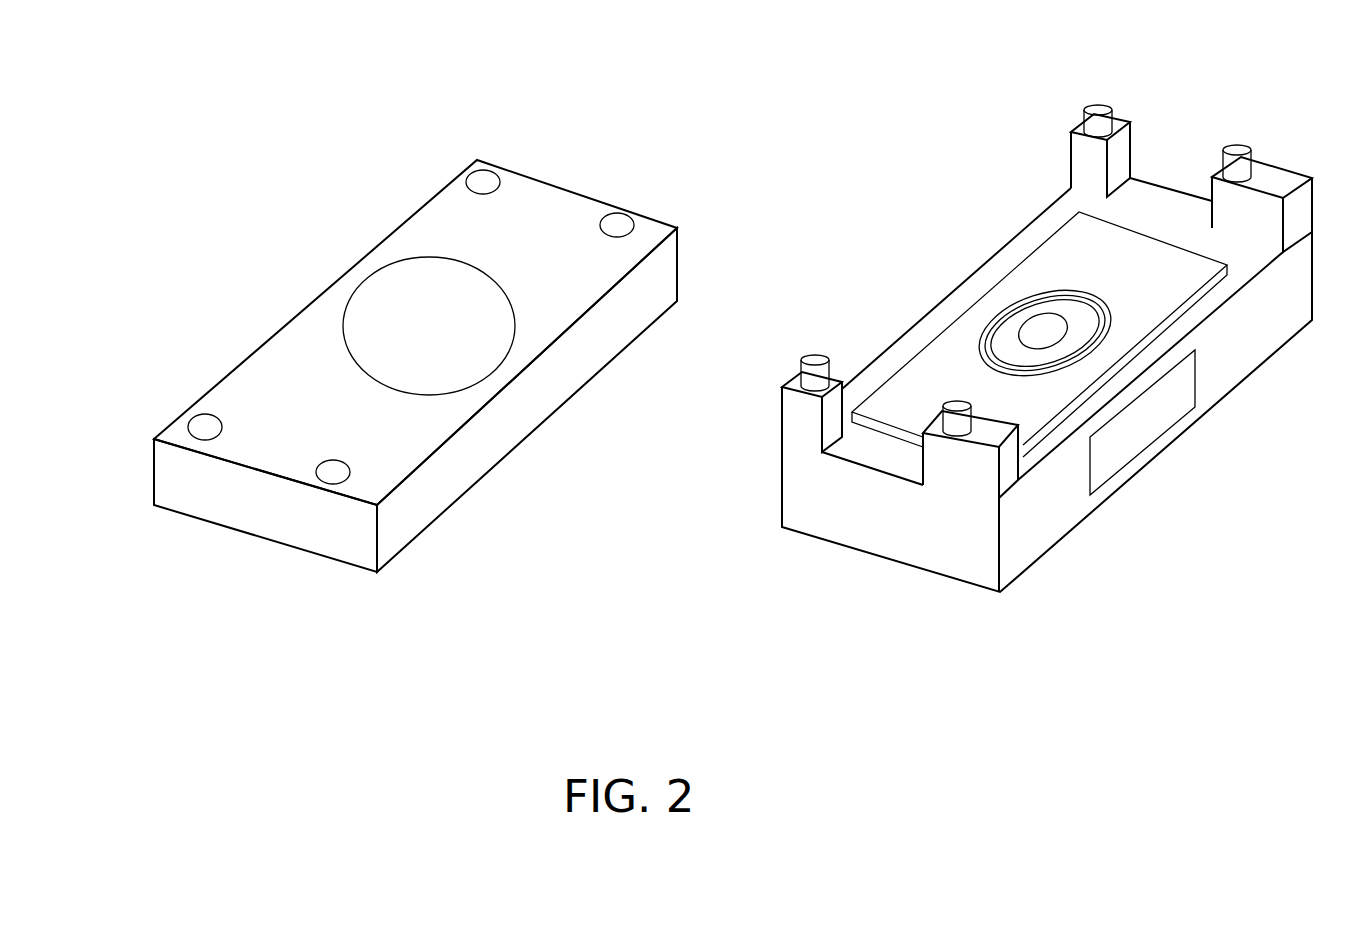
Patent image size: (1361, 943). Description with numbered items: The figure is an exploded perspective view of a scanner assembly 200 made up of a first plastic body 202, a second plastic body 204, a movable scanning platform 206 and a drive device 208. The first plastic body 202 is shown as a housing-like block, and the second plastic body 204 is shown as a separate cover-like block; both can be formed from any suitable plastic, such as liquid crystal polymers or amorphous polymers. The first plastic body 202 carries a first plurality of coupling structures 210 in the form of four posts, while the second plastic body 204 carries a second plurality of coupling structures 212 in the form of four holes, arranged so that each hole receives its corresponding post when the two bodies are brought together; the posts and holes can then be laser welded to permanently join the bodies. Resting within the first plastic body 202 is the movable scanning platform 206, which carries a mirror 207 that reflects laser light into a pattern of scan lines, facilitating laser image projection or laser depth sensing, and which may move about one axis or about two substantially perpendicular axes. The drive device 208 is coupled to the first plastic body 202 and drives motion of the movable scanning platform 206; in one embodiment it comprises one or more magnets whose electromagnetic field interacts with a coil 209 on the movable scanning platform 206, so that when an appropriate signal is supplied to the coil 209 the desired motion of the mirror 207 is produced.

The scanner assembly 200 is at (672, 696).
The first plastic body 202 is at (860, 607).
The second plastic body 204 is at (270, 588).
The movable scanning platform 206 is at (1063, 237).
The mirror 207 is at (1043, 320).
The drive device 208 is at (1160, 438).
The coil 209 is at (1085, 300).
The first plurality of coupling structures 210 is at (812, 358).
The second plurality of coupling structures 212 is at (488, 176).